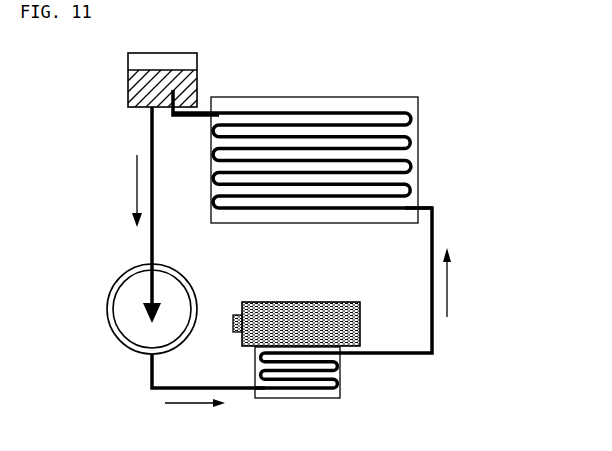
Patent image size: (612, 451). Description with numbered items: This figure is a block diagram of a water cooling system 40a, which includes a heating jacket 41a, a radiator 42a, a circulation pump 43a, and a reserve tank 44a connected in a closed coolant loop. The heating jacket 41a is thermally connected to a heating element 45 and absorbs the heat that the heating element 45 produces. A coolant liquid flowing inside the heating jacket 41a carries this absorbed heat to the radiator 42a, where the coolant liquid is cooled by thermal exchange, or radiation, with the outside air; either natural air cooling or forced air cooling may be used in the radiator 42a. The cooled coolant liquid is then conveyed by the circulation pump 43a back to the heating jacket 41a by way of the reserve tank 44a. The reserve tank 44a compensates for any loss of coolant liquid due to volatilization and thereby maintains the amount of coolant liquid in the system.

The water cooling system 40a is at (490, 160).
The heating jacket 41a is at (343, 389).
The radiator 42a is at (409, 116).
The circulation pump 43a is at (131, 303).
The reserve tank 44a is at (140, 95).
The heating element 45 is at (300, 312).